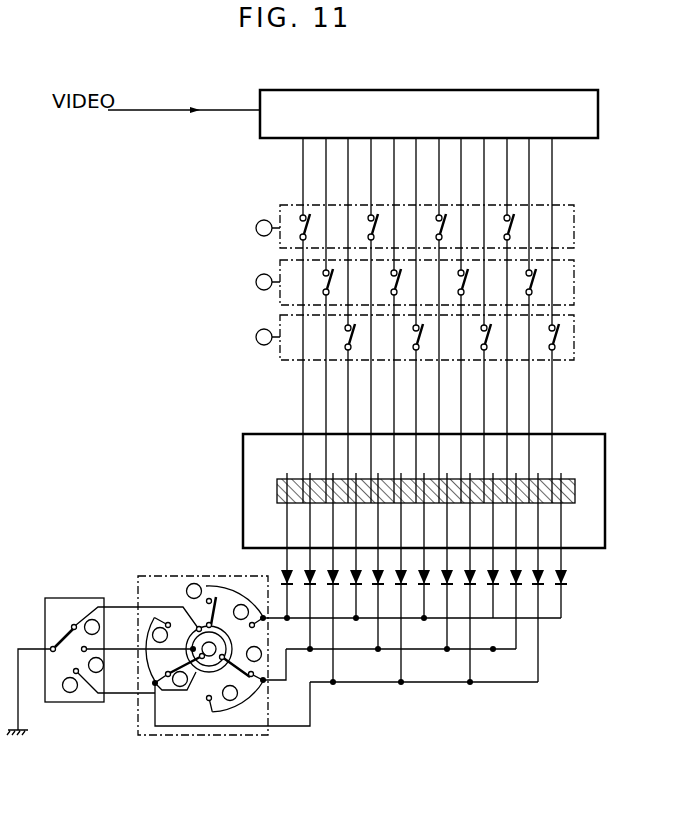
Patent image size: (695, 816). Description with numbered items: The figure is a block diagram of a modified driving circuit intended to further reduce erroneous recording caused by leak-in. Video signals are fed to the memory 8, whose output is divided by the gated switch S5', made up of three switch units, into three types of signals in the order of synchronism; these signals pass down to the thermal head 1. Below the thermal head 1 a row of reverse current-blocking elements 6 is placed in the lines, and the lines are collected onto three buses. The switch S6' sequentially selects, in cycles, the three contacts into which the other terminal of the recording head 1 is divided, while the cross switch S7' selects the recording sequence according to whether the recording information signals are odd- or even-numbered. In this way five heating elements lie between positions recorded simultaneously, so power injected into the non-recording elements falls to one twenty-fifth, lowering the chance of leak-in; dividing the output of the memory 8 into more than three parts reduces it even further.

The memory 8 is at (525, 90).
The thermal head 1 is at (243, 455).
The reverse current-blocking element 6 is at (566, 580).
The gated switch S5' is at (390, 320).
The switch S6' is at (102, 649).
The cross switch S7' is at (203, 639).